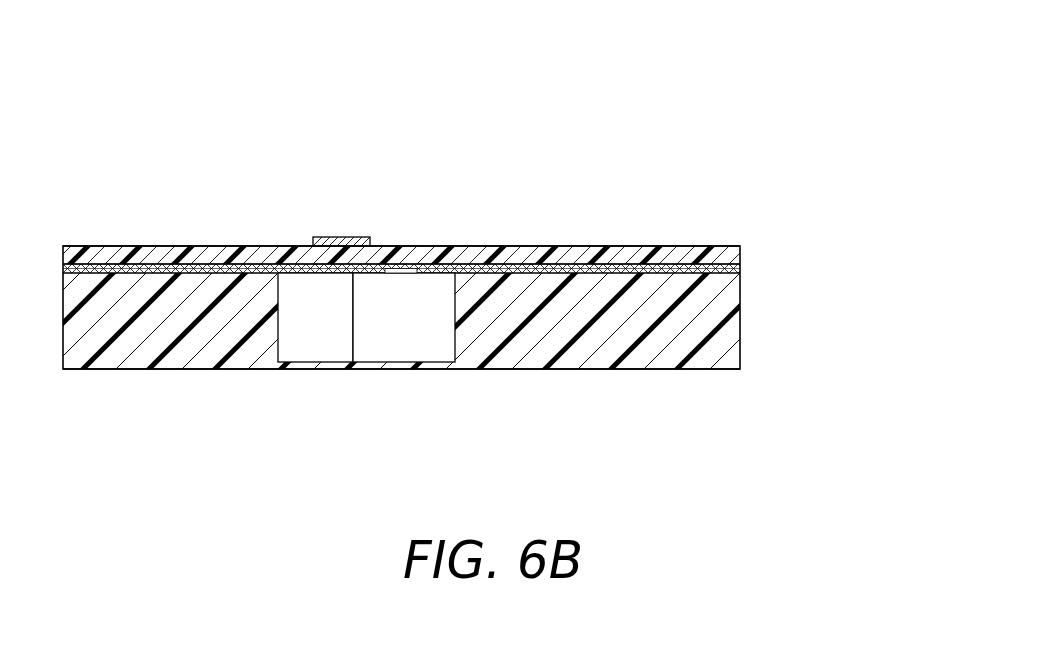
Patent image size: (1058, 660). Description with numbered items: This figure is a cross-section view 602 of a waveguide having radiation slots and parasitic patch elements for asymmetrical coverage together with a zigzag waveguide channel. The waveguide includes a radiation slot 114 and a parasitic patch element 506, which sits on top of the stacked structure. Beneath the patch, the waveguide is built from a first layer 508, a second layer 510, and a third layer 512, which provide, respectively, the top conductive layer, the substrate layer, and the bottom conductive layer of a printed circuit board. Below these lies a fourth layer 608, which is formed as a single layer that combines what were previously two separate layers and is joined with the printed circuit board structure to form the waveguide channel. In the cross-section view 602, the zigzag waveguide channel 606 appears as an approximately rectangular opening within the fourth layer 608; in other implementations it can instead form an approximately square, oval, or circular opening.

The cross-section view 602 is at (481, 251).
The parasitic patch element 506 is at (322, 237).
The first layer 508 is at (367, 244).
The second layer 510 is at (722, 258).
The third layer 512 is at (722, 273).
The fourth layer 608 is at (727, 342).
The zigzag waveguide channel 606 is at (387, 328).
The radiation slot 114 is at (407, 274).